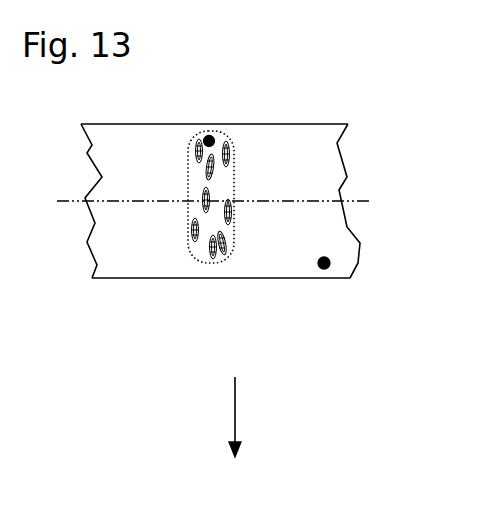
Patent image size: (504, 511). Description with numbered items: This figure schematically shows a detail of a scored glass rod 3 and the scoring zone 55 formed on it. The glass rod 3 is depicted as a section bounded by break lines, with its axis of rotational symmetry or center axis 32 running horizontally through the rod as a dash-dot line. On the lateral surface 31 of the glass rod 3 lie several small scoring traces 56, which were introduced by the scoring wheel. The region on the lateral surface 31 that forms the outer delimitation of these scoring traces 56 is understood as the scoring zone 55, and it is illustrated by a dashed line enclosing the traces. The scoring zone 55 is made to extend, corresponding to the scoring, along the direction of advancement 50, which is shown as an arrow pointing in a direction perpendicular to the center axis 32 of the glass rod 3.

The glass rod 3 is at (120, 278).
The lateral surface 31 is at (324, 263).
The center axis 32 is at (75, 200).
The direction of advancement 50 is at (235, 412).
The scoring zone 55 is at (209, 141).
The scoring traces 56 is at (197, 243).